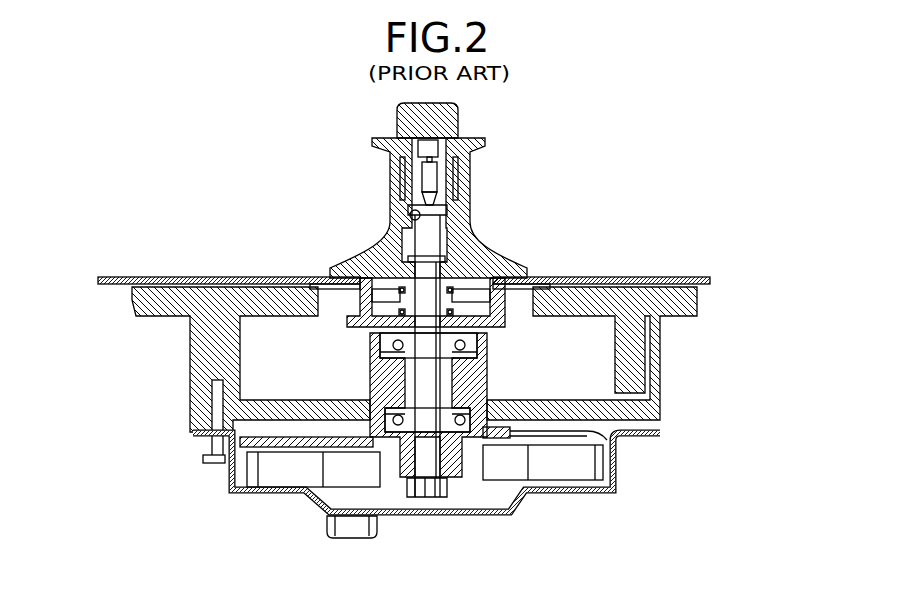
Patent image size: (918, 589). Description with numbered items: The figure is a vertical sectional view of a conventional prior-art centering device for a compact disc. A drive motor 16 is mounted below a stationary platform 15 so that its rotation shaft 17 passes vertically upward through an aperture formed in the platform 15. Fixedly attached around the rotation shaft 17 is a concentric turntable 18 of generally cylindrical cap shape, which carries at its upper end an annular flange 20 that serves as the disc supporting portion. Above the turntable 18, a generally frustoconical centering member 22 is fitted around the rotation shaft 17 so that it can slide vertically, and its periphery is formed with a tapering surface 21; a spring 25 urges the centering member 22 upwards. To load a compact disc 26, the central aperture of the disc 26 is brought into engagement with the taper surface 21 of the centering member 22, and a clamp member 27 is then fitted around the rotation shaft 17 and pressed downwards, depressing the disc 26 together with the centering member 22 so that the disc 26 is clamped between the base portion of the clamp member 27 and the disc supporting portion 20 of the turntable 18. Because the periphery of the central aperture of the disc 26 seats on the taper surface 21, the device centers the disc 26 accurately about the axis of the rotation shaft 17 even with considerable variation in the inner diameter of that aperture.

The stationary platform 15 is at (630, 297).
The drive motor 16 is at (292, 493).
The rotation shaft 17 is at (430, 245).
The turntable 18 is at (508, 322).
The annular flange 20 is at (530, 279).
The tapering surface 21 is at (495, 264).
The centering member 22 is at (467, 272).
The spring 25 is at (398, 297).
The compact disc 26 is at (686, 277).
The clamp member 27 is at (462, 213).